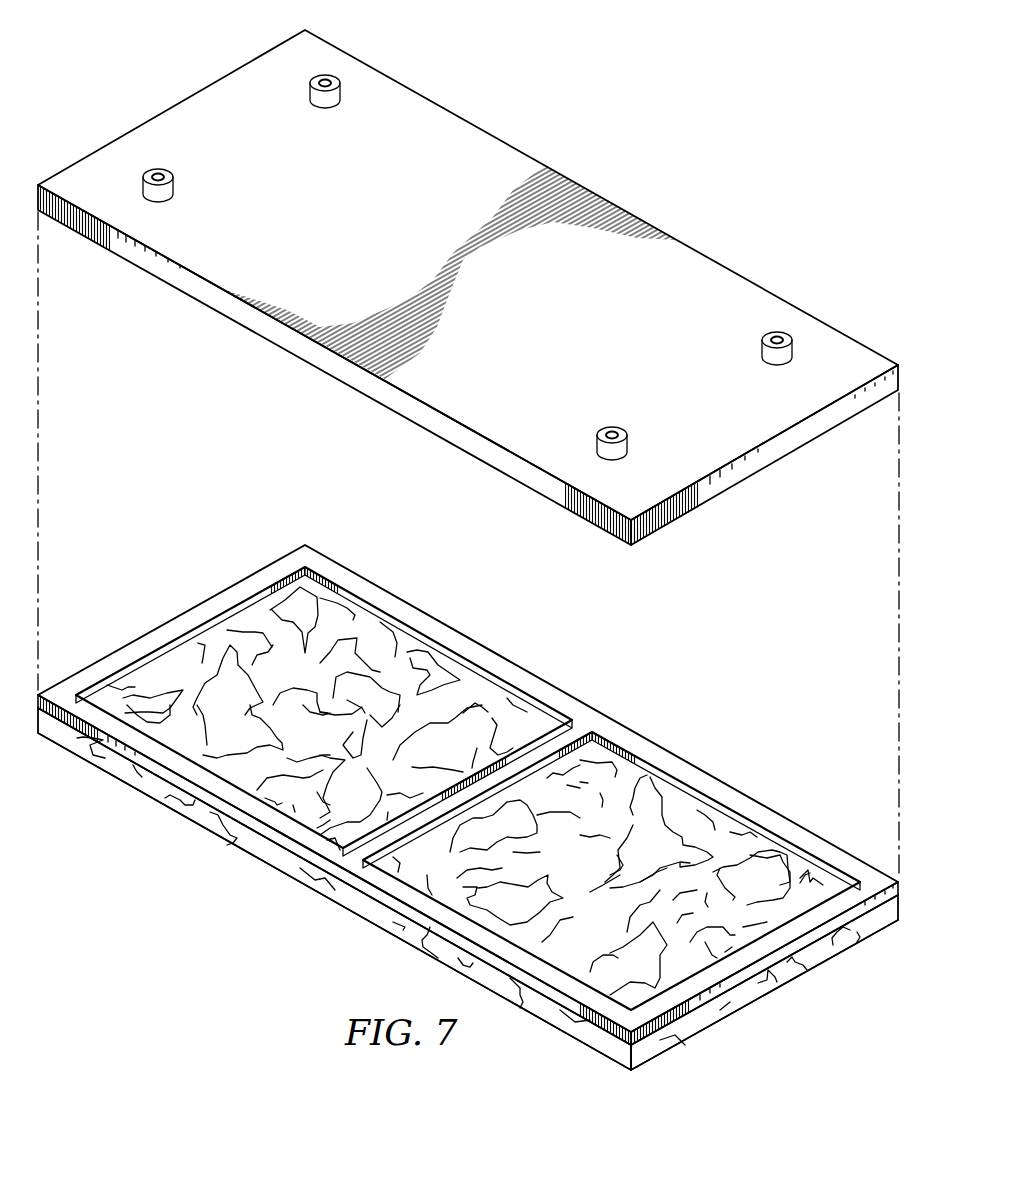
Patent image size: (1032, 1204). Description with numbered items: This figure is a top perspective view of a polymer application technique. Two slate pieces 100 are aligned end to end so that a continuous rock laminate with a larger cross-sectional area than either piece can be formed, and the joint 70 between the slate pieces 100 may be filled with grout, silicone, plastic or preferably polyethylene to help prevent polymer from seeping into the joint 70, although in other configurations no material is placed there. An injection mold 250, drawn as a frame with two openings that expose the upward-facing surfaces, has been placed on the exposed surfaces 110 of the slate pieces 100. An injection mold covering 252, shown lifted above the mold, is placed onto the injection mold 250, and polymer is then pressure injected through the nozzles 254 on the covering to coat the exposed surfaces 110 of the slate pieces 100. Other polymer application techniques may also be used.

The injection mold covering 252 is at (185, 118).
The nozzles 254 is at (320, 72).
The injection mold 250 is at (585, 722).
The exposed surfaces 110 is at (188, 658).
The slate pieces 100 is at (153, 793).
The joint 70 is at (332, 887).